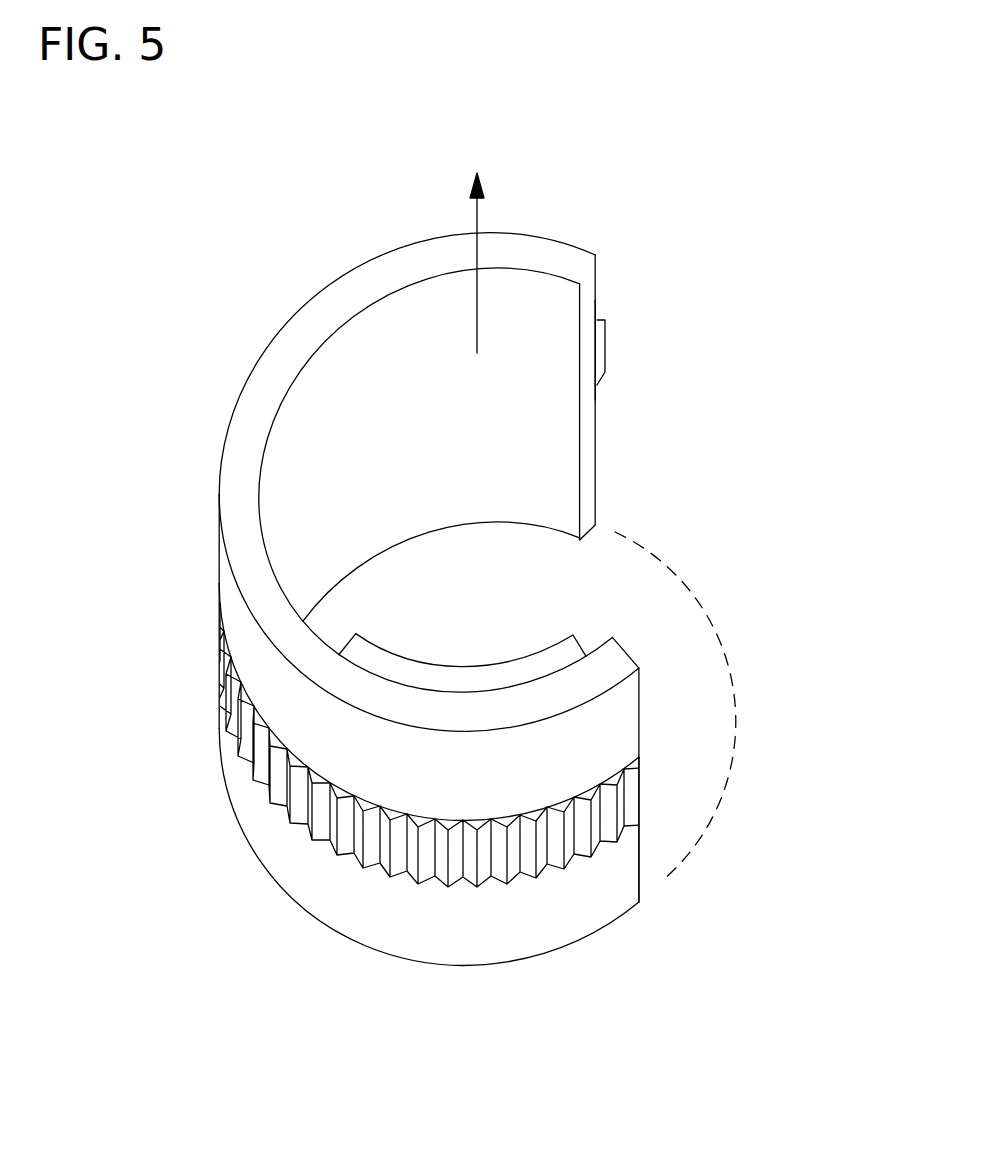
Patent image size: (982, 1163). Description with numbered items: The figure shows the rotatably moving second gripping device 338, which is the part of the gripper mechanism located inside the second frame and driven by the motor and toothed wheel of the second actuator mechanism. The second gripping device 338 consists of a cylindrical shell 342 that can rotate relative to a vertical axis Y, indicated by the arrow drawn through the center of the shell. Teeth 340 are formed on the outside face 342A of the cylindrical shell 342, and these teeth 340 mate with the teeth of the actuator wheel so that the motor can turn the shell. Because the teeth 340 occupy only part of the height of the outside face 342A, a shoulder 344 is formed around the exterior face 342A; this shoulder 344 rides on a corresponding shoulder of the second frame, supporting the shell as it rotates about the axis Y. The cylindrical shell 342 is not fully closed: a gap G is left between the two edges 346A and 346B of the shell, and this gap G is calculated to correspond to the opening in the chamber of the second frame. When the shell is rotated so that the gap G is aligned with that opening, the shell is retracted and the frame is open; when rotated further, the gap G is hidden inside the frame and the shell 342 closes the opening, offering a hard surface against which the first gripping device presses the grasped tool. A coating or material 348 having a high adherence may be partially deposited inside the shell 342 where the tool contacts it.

The second gripping device 338 is at (155, 293).
The teeth 340 is at (660, 947).
The cylindrical shell 342 is at (182, 600).
The outside face 342A is at (618, 764).
The shoulder 344 is at (605, 397).
The edge 346A is at (590, 298).
The edge 346B is at (633, 715).
The coating or material having a high adherence 348 is at (453, 672).
The gap G is at (735, 653).
The vertical axis Y is at (476, 247).